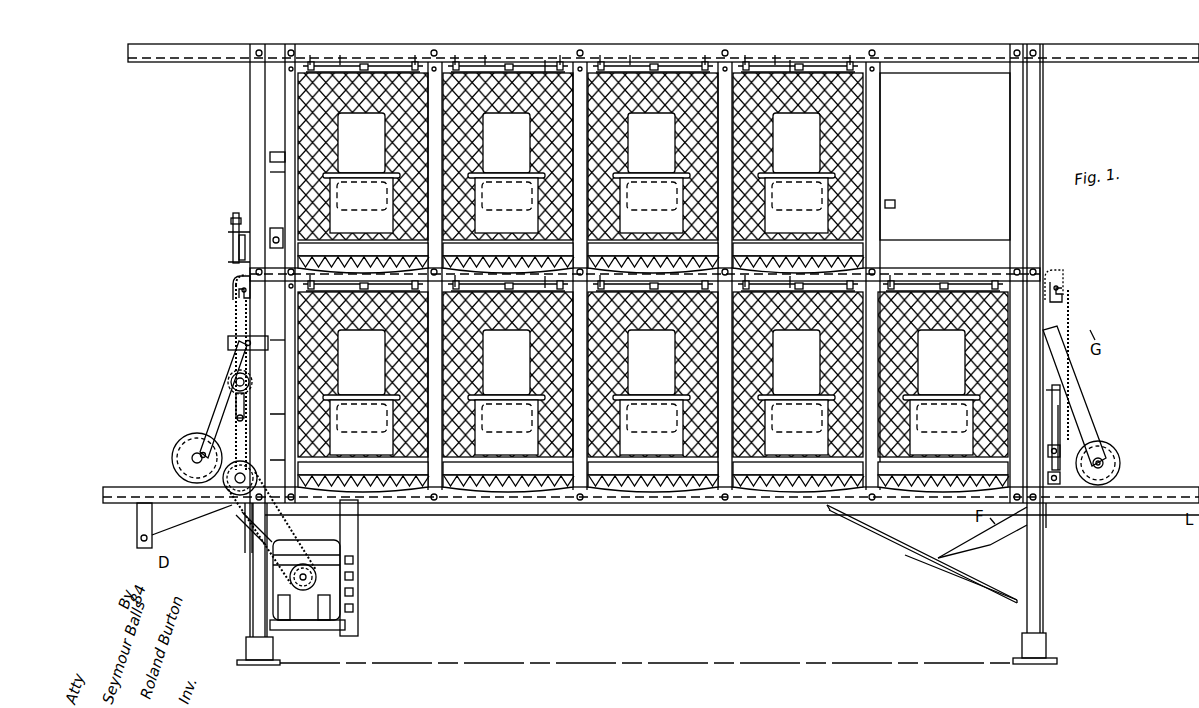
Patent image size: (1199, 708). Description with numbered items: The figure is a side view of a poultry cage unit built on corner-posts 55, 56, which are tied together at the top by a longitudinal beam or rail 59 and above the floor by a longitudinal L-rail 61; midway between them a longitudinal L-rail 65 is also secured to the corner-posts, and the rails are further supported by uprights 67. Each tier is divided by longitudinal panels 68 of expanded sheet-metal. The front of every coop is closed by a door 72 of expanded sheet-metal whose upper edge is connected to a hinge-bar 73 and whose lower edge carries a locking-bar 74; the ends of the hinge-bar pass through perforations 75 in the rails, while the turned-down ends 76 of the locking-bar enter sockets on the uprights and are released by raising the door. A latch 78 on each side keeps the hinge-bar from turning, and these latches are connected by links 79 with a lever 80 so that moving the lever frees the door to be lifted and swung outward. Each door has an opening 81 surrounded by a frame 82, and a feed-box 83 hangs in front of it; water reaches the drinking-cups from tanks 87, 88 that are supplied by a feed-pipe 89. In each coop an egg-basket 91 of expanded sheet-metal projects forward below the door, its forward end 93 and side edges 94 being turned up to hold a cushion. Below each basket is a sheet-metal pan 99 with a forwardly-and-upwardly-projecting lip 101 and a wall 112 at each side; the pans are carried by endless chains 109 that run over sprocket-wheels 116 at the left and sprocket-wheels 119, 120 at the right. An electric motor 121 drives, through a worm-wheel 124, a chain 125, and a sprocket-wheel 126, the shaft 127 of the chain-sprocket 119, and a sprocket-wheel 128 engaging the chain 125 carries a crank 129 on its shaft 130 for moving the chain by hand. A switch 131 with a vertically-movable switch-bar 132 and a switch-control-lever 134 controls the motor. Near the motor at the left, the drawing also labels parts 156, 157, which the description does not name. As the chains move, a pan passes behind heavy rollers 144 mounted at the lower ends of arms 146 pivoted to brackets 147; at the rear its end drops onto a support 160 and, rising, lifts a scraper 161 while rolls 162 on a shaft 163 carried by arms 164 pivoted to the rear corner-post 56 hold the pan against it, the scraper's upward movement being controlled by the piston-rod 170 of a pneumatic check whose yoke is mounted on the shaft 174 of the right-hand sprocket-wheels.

The corner-post 55 is at (252, 130).
The corner-post 56 is at (1043, 113).
The longitudinal metal beam or rail 59 is at (1140, 72).
The longitudinal L-rail 61 is at (102, 492).
The longitudinal L-rail 65 is at (980, 260).
The upright 67 is at (895, 153).
The longitudinal panel 68 is at (865, 116).
The door 72 is at (357, 123).
The hinge-bar 73 is at (625, 60).
The locking-bar 74 is at (390, 249).
The perforation 75 is at (738, 63).
The end of locking-bar 76 is at (600, 362).
The latch 78 is at (312, 63).
The link 79 is at (340, 63).
The lever 80 is at (364, 63).
The opening 81 is at (519, 130).
The frame 82 is at (529, 151).
The feed-box 83 is at (368, 190).
The tank 87 is at (273, 155).
The tank 88 is at (273, 391).
The feed-pipe 89 is at (275, 232).
The floor- or egg-basket 91 is at (865, 234).
The forward end of basket 93 is at (817, 258).
The side edge of basket 94 is at (547, 254).
The pan 99 is at (1090, 380).
The lip 101 is at (138, 520).
The endless chain 109 is at (232, 325).
The wall 112 is at (975, 534).
The sprocket-wheel 116 is at (235, 305).
The chain-sprocket 119 is at (1057, 485).
The sprocket-wheel 120 is at (1065, 293).
The electric motor 121 is at (342, 537).
The worm-wheel 124 is at (293, 566).
The chain 125 is at (325, 538).
The sprocket-wheel 126 is at (234, 530).
The shaft 127 is at (220, 479).
The sprocket-wheel 128 is at (230, 380).
The crank 129 is at (236, 396).
The shaft 130 is at (235, 384).
The switch 131 is at (242, 254).
The switch-bar 132 is at (237, 223).
The switch-control-lever 134 is at (230, 240).
The roller 144 is at (193, 451).
The arm 146 is at (213, 427).
The bracket 147 is at (228, 342).
The support bracket 156 is at (234, 550).
The support strut 157 is at (258, 541).
The support 160 is at (968, 570).
The scraper 161 is at (1048, 505).
The roll 162 is at (1120, 466).
The shaft 163 is at (1102, 470).
The arm 164 is at (1088, 436).
The piston-rod 170 is at (1060, 420).
The shaft 174 is at (1057, 275).